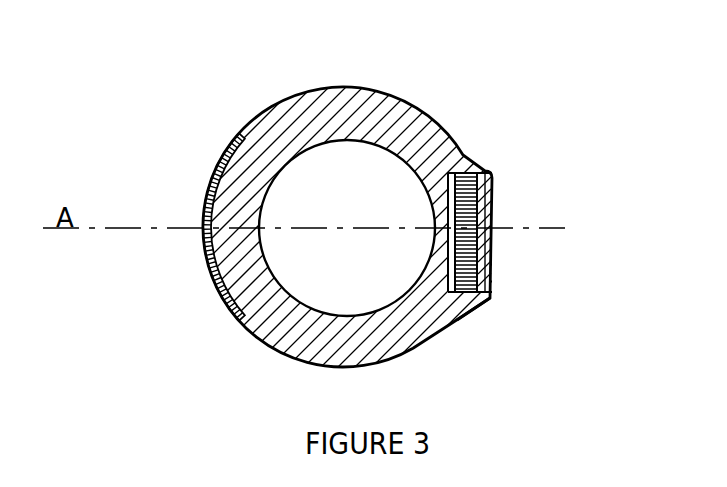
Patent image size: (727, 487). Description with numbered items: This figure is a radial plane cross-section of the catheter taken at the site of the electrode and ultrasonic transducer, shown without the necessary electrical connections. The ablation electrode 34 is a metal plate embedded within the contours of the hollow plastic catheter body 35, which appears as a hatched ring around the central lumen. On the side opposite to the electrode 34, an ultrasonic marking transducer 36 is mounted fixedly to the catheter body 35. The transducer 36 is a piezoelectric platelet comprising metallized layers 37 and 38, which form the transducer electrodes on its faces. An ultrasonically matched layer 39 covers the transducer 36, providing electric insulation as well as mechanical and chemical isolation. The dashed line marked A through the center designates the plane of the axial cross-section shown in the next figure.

The ablation electrode 34 is at (210, 197).
The catheter body 35 is at (395, 122).
The ultrasonic marking transducer 36 is at (489, 236).
The metallized layer 37 is at (482, 172).
The metallized layer 38 is at (493, 282).
The ultrasonically matched layer 39 is at (488, 298).